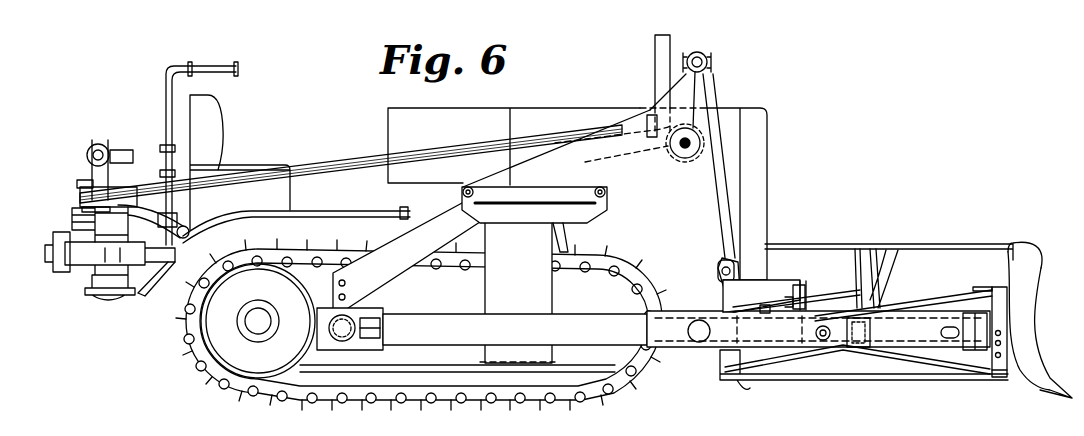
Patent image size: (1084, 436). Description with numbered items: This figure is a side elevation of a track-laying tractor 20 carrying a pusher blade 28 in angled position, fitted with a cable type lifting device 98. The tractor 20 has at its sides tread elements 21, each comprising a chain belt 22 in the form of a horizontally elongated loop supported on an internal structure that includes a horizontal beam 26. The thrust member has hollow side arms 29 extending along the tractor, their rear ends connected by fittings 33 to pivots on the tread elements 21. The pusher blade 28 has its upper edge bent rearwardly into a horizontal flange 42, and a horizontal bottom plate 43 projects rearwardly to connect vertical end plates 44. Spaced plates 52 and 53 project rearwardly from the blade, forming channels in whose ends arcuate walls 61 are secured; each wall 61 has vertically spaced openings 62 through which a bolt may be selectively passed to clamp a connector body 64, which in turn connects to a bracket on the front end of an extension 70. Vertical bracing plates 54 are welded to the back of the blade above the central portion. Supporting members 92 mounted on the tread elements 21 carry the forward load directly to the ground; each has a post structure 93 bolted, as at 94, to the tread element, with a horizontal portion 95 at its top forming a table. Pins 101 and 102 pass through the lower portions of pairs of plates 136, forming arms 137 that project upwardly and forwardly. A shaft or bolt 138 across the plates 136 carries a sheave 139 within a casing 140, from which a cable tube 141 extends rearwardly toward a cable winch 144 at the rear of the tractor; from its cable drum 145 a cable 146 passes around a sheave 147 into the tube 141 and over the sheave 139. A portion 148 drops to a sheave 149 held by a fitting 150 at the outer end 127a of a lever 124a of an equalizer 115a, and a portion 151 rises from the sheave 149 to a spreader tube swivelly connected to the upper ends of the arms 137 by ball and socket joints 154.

The tractor 20 is at (323, 138).
The tread elements 21 is at (338, 228).
The chain belt 22 is at (185, 323).
The horizontal beam 26 is at (593, 355).
The pusher blade 28 is at (1030, 307).
The side arms 29 is at (446, 325).
The fittings 33 is at (311, 328).
The horizontal flange 42 is at (970, 244).
The horizontal bottom plate 43 is at (883, 381).
The vertical end plates 44 is at (1015, 268).
The plate 52 is at (921, 302).
The plate 53 is at (943, 372).
The vertical bracing plates 54 is at (873, 244).
The arcuate walls 61 is at (1007, 363).
The openings 62 is at (1003, 340).
The connector body 64 is at (983, 360).
The extension 70 is at (768, 335).
The supporting members 92 is at (490, 236).
The post structure 93 is at (533, 279).
The bolt 94 is at (493, 358).
The horizontal portion 95 is at (582, 216).
The cable type lifting device 98 is at (716, 97).
The horizontal pins 101 is at (594, 191).
The horizontal pins 102 is at (465, 188).
The equalizer 115a is at (826, 284).
The lever 124a is at (772, 291).
The outer end 127a is at (742, 292).
The plates 136 is at (561, 168).
The arms 137 is at (630, 104).
The shaft or bolt 138 is at (684, 160).
The sheave 139 is at (673, 153).
The casing 140 is at (644, 155).
The cable tube 141 is at (361, 166).
The cable winch 144 is at (88, 172).
The cable drum 145 is at (80, 182).
The cable 146 is at (80, 189).
The sheave 147 is at (82, 207).
The cable portion 148 is at (717, 217).
The sheave 149 is at (720, 248).
The fitting 150 is at (718, 277).
The cable portion 151 is at (723, 193).
The ball and socket joints 154 is at (706, 33).